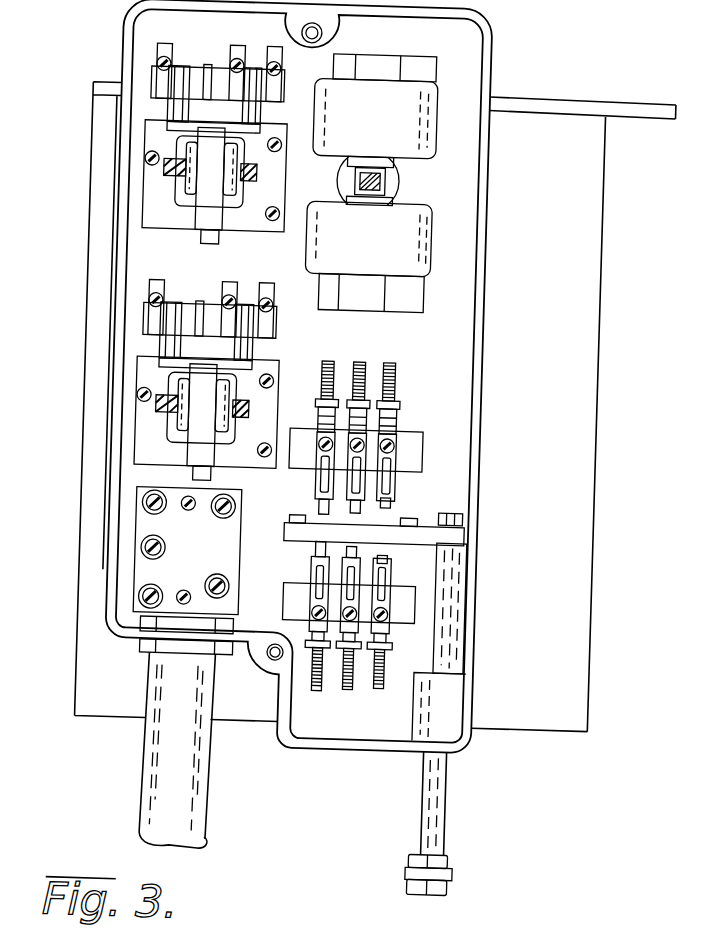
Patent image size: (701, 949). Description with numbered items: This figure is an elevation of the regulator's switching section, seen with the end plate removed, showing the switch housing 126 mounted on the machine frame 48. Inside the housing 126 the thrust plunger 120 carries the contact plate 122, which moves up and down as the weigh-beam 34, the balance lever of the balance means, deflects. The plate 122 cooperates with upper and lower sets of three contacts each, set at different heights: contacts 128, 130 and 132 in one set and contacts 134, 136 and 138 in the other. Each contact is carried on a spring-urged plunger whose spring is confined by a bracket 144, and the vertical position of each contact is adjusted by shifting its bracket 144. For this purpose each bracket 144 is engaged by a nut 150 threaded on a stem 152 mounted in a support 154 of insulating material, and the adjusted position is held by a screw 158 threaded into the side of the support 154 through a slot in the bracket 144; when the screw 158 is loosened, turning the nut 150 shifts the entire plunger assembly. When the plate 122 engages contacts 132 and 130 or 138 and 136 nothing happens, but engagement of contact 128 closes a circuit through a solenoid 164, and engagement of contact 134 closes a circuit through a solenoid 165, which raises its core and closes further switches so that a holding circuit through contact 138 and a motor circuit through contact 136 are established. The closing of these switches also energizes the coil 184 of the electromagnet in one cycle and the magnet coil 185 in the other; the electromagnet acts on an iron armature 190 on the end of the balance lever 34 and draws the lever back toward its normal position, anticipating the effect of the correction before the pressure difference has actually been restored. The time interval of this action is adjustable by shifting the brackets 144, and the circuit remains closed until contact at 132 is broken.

The machine frame 48 is at (585, 452).
The switch housing 126 is at (477, 607).
The thrust plunger 120 is at (440, 775).
The solenoid 164 is at (190, 185).
The solenoid 165 is at (208, 380).
The magnet coil 185 is at (413, 110).
The coil of electromagnet 184 is at (413, 250).
The iron armature 190 is at (385, 173).
The weigh-beam 34 is at (378, 183).
The stem 152 is at (357, 362).
The nut 150 is at (364, 400).
The bracket 144 is at (318, 428).
The screw 158 is at (320, 450).
The support 154 is at (340, 455).
The contact 132 is at (321, 510).
The contact 130 is at (354, 508).
The contact 128 is at (392, 500).
The contact plate 122 is at (390, 527).
The contact 138 is at (318, 550).
The contact 136 is at (357, 553).
The contact 134 is at (383, 558).